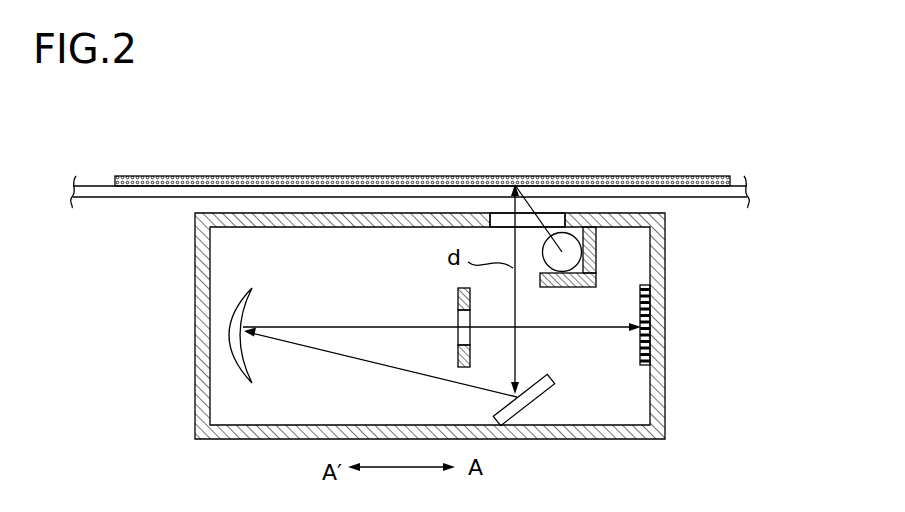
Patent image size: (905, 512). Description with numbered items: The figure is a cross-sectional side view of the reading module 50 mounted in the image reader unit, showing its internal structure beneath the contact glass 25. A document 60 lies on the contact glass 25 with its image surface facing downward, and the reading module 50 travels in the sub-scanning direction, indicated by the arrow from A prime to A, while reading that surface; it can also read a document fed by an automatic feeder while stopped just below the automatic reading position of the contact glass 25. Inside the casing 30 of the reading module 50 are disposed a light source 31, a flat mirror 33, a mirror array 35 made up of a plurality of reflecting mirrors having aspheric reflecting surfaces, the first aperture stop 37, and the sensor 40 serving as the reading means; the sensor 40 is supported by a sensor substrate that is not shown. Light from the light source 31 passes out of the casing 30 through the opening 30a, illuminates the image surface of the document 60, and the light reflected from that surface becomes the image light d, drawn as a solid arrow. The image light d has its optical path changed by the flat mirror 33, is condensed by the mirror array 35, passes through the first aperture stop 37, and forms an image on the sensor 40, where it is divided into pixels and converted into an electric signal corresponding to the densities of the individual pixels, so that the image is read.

The contact glass 25 is at (90, 185).
The document 60 is at (675, 182).
The casing 30 is at (252, 435).
The opening 30a is at (503, 218).
The light source 31 is at (563, 260).
The flat mirror 33 is at (525, 403).
The mirror array 35 is at (228, 350).
The first aperture stop 37 is at (458, 305).
The sensor 40 is at (640, 352).
The reading module 50 is at (699, 295).